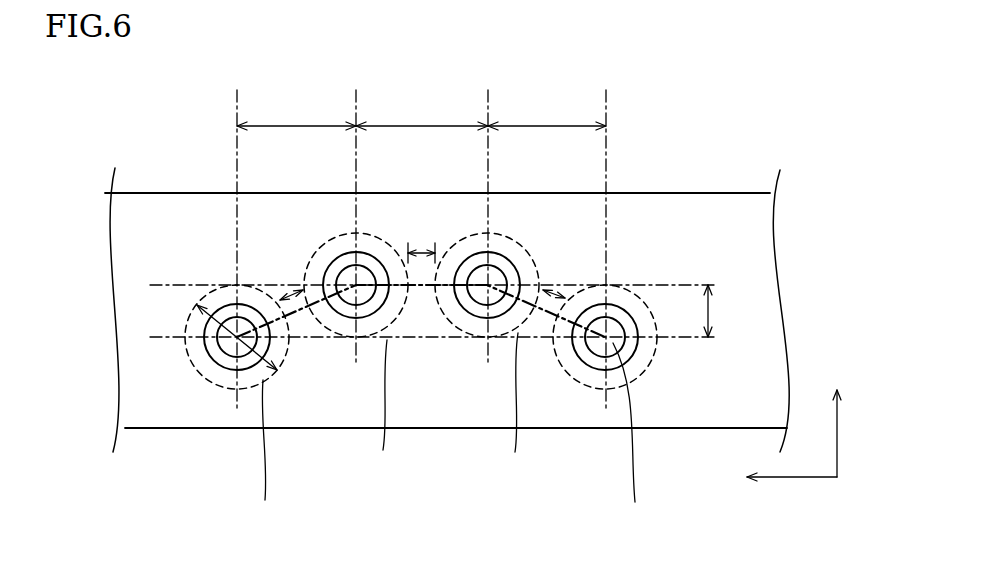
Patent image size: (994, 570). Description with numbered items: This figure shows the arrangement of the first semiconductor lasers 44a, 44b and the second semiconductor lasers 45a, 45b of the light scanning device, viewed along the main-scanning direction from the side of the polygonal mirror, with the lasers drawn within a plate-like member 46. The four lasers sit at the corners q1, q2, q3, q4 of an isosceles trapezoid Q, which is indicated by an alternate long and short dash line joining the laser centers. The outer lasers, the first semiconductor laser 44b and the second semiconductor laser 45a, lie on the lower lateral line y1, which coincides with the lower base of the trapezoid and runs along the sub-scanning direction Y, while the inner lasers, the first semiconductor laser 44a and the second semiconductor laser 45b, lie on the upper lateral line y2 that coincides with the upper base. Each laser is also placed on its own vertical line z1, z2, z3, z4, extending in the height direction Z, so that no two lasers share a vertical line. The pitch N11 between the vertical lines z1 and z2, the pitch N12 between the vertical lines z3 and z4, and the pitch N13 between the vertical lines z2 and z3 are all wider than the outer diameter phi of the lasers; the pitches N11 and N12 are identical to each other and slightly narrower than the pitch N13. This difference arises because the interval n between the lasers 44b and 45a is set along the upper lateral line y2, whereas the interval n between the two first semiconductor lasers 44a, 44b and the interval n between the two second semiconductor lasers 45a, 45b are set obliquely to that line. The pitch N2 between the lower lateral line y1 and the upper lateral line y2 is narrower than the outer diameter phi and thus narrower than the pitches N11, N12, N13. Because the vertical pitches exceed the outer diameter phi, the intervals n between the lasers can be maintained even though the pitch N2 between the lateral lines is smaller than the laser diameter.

The head holder / nozzle plate member 46 is at (717, 193).
The first semiconductor laser 44a is at (523, 409).
The first semiconductor laser 44b is at (637, 441).
The second semiconductor laser 45a is at (273, 459).
The second semiconductor laser 45b is at (392, 413).
The corner of the isosceles trapezoid q1 is at (488, 284).
The corner of the isosceles trapezoid q2 is at (604, 338).
The corner of the isosceles trapezoid q3 is at (238, 338).
The corner of the isosceles trapezoid q4 is at (355, 284).
The vertical line z1 is at (607, 98).
The vertical line z2 is at (489, 98).
The vertical line z3 is at (357, 98).
The vertical line z4 is at (238, 98).
The lower lateral line y1 is at (673, 340).
The upper lateral line y2 is at (673, 283).
The pitch between vertical lines z1 and z2 N11 is at (547, 125).
The pitch between vertical lines z3 and z4 N12 is at (297, 125).
The pitch between vertical lines z2 and z3 N13 is at (425, 125).
The pitch between lower and upper lateral lines N2 is at (712, 312).
The interval between semiconductor lasers n is at (421, 250).
The outer diameter of the semiconductor lasers phi is at (196, 318).
The isosceles trapezoid Q is at (438, 340).
The sub-scanning direction Y is at (781, 478).
The height direction Z is at (836, 417).